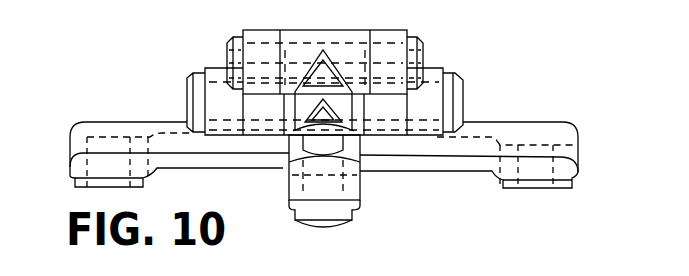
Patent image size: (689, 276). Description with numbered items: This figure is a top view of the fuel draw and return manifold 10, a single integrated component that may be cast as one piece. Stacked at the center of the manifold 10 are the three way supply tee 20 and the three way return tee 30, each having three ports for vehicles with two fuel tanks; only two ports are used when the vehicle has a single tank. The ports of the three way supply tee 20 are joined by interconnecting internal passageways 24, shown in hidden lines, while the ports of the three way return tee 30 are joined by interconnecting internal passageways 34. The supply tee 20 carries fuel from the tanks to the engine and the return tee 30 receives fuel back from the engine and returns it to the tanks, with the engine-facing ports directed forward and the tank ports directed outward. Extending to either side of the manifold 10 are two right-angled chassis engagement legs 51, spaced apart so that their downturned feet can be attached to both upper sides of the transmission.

The manifold 10 is at (553, 65).
The three way supply tee 20 is at (441, 63).
The interconnecting internal passageways 24 is at (427, 100).
The three way return tee 30 is at (403, 27).
The interconnecting internal passageways 34 is at (386, 58).
The chassis engagement legs 51 is at (112, 121).